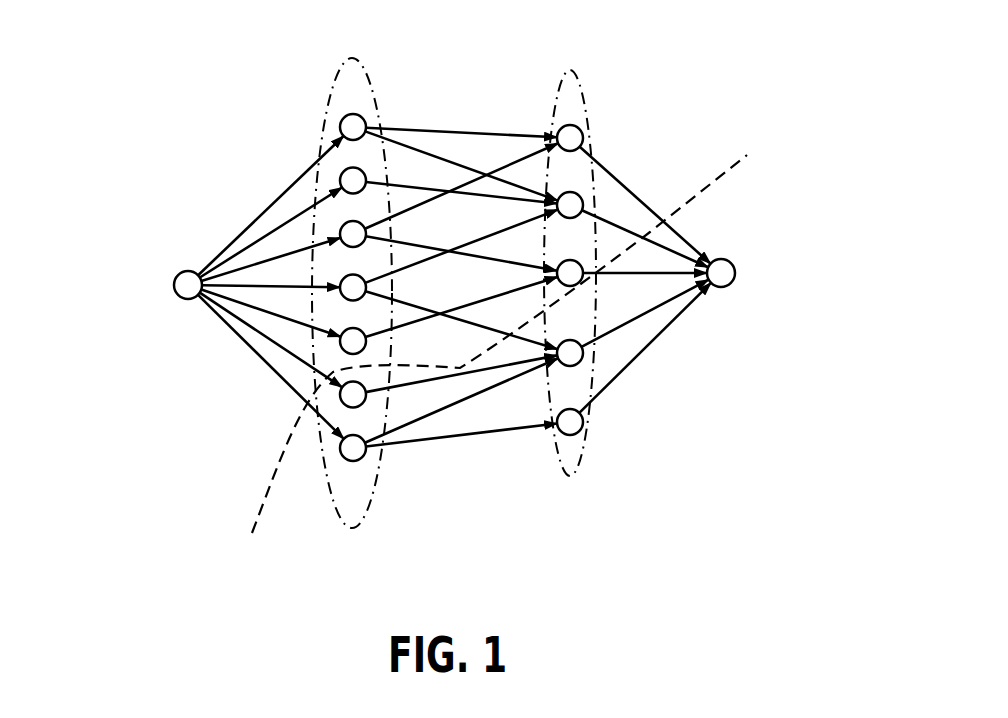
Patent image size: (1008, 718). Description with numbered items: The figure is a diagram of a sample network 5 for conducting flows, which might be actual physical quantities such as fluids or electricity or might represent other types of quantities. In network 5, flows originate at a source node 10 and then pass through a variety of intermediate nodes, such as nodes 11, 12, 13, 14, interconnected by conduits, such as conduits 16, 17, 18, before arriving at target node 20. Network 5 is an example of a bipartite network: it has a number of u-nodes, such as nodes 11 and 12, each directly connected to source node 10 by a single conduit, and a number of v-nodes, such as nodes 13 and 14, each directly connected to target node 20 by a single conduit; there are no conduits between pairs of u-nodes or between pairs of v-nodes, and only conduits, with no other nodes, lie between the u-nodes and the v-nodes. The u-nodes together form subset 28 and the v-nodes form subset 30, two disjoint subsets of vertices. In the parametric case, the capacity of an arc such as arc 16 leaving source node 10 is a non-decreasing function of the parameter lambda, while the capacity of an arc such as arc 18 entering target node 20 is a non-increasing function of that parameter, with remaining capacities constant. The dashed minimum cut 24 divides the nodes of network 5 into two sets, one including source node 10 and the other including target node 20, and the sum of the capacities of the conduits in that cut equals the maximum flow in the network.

The network 5 is at (131, 136).
The source node 10 is at (178, 274).
The u-node 11 is at (363, 167).
The u-node 12 is at (380, 452).
The v-node 13 is at (580, 262).
The v-node 14 is at (570, 367).
The conduit (arc leaving source node) 16 is at (285, 312).
The conduit 17 is at (442, 130).
The conduit (arc entering target node) 18 is at (638, 312).
The target node 20 is at (731, 261).
The minimum cut 24 is at (253, 515).
The subset of u-nodes 28 is at (353, 58).
The subset of v-nodes 30 is at (563, 75).